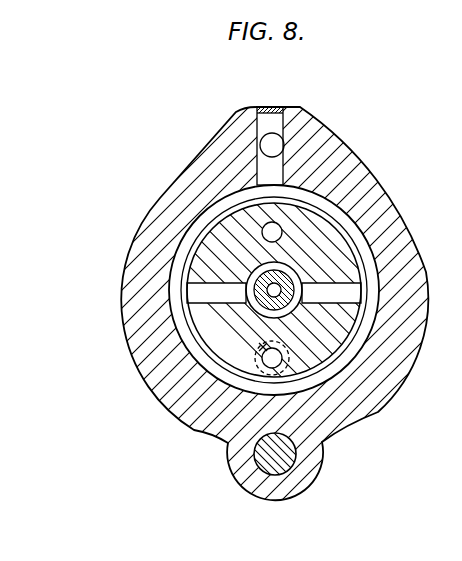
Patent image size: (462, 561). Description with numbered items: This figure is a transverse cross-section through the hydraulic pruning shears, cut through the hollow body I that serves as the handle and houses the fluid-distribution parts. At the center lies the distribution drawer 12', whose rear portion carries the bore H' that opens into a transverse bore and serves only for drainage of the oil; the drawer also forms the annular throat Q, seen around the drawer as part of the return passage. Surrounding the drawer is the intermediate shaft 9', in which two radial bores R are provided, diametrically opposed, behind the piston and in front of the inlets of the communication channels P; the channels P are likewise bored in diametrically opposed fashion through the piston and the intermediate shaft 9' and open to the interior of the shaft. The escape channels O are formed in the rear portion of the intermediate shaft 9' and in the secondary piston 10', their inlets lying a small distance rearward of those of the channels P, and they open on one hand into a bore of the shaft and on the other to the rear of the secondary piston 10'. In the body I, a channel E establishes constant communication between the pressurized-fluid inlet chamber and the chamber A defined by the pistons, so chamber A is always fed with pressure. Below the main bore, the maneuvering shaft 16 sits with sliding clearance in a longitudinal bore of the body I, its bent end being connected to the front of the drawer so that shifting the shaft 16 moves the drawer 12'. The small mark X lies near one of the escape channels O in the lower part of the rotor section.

The channel E is at (263, 143).
The hollow body I is at (162, 210).
The chamber A is at (178, 253).
The secondary piston 10' is at (225, 290).
The intermediate shaft 9' is at (232, 290).
The radial bores R is at (197, 293).
The annular throat Q is at (251, 272).
The distribution drawer 12' is at (255, 298).
The bore H' is at (251, 317).
The escape channels O is at (265, 224).
The communication channels P is at (289, 376).
The reference mark X is at (263, 347).
The maneuvering shaft 16 is at (232, 485).